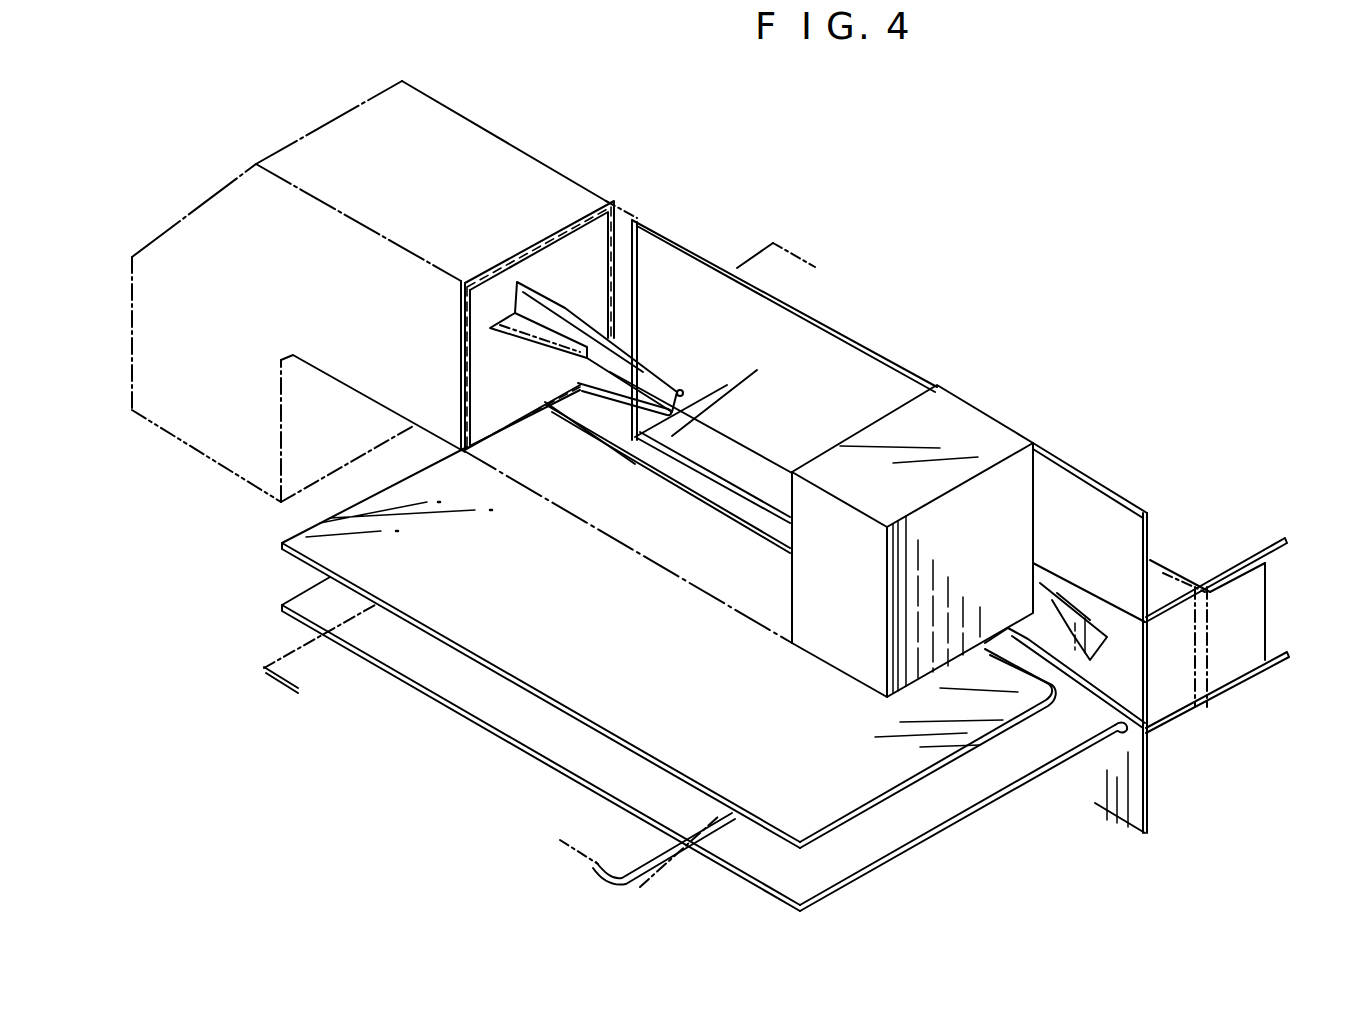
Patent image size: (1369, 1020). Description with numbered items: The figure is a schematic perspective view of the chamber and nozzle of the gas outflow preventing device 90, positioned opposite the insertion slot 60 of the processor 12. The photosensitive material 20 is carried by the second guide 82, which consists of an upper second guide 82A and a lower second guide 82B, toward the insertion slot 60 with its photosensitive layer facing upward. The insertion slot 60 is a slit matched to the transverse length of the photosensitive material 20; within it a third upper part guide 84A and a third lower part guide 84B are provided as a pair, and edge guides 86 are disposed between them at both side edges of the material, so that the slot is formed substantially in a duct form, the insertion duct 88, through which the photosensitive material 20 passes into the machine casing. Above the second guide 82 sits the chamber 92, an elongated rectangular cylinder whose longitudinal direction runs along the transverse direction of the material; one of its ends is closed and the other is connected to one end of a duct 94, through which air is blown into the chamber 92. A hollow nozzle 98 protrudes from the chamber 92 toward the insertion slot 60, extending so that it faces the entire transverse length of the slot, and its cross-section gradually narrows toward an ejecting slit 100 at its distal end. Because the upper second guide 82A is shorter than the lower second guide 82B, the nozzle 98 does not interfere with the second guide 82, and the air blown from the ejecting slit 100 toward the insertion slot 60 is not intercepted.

The processor 12 is at (1282, 367).
The photosensitive material 20 is at (677, 842).
The insertion slot 60 is at (1194, 631).
The second guide 82 is at (713, 679).
The upper second guide 82A is at (847, 823).
The lower second guide 82B is at (967, 812).
The third upper part guide 84A is at (1261, 537).
The third lower part guide 84B is at (1275, 645).
The edge guides 86 is at (1253, 603).
The insertion duct 88 is at (1237, 702).
The gas outflow preventing device 90 is at (607, 130).
The chamber 92 is at (583, 193).
The duct 94 is at (131, 414).
The nozzle 98 is at (647, 350).
The ejecting slit 100 is at (684, 390).